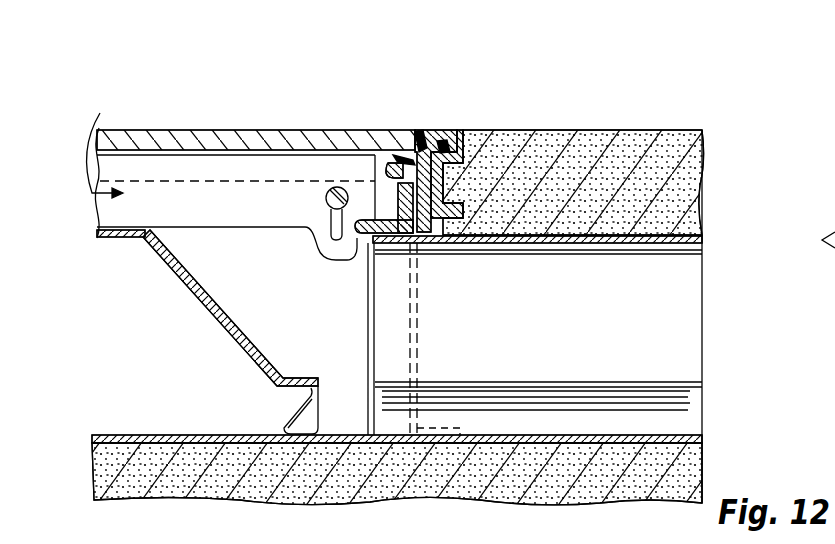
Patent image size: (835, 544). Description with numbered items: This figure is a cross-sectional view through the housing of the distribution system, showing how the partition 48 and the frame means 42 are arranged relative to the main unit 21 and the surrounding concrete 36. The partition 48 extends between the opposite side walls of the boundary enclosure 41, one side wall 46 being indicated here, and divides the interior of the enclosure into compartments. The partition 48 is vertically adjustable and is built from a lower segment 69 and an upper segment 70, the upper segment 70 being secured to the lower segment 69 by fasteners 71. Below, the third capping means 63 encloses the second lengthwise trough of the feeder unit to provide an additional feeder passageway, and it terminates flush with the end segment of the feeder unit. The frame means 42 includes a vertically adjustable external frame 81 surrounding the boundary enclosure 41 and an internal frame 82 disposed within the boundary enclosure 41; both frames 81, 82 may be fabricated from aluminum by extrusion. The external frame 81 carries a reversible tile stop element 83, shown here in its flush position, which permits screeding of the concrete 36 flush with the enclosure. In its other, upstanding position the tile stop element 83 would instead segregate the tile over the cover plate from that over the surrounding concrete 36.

The main unit 21 is at (834, 215).
The concrete 36 is at (680, 147).
The boundary enclosure 41 is at (418, 331).
The frame means 42 is at (465, 131).
The side wall 46 is at (420, 300).
The partition 48 is at (105, 145).
The third capping means 63 is at (672, 243).
The lower segment 69 is at (200, 258).
The upper segment 70 is at (173, 197).
The fastener 71 is at (325, 200).
The external frame 81 is at (437, 130).
The internal frame 82 is at (370, 233).
The tile stop element 83 is at (418, 140).